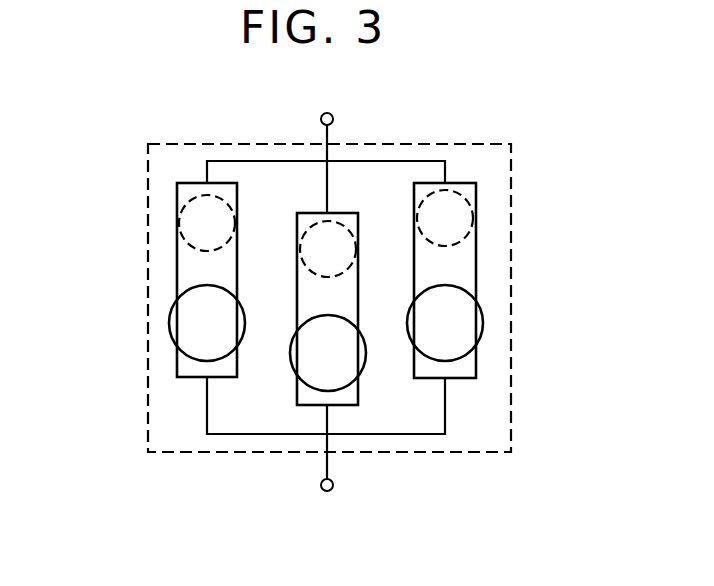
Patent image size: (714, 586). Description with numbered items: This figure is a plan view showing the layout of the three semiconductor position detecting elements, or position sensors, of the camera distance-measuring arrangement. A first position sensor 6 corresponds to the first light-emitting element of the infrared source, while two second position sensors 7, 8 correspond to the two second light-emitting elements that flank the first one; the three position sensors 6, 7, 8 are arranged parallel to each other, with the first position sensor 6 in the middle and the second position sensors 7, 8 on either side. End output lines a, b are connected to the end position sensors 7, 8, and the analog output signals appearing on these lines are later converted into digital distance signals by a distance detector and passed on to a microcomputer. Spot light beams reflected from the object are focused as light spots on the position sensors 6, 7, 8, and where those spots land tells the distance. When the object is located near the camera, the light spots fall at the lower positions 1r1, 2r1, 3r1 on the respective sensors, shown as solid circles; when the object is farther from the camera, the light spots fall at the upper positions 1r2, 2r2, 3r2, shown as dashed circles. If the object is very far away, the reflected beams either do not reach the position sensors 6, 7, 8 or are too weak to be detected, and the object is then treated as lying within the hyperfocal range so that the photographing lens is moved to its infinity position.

The first position sensor 6 is at (338, 212).
The second position sensor 7 is at (188, 183).
The second position sensor 8 is at (457, 183).
The light spot lower position 1r1 is at (364, 355).
The light spot upper position 1r2 is at (348, 278).
The light spot lower position 2r1 is at (170, 332).
The light spot upper position 2r2 is at (182, 198).
The light spot lower position 3r1 is at (485, 327).
The light spot upper position 3r2 is at (470, 197).
The end output line a is at (328, 503).
The end output line b is at (330, 96).